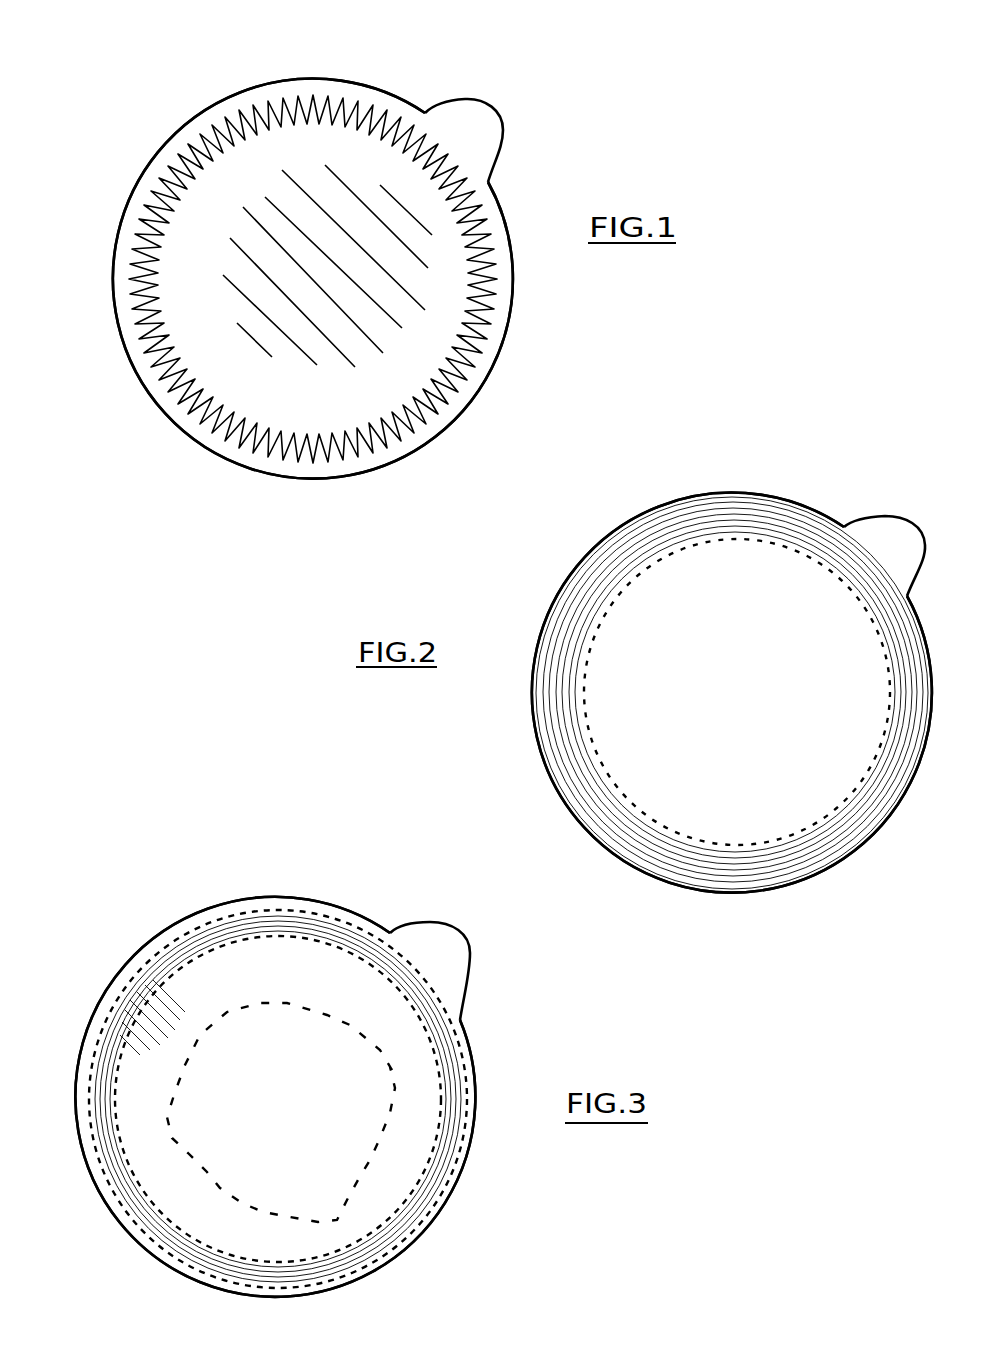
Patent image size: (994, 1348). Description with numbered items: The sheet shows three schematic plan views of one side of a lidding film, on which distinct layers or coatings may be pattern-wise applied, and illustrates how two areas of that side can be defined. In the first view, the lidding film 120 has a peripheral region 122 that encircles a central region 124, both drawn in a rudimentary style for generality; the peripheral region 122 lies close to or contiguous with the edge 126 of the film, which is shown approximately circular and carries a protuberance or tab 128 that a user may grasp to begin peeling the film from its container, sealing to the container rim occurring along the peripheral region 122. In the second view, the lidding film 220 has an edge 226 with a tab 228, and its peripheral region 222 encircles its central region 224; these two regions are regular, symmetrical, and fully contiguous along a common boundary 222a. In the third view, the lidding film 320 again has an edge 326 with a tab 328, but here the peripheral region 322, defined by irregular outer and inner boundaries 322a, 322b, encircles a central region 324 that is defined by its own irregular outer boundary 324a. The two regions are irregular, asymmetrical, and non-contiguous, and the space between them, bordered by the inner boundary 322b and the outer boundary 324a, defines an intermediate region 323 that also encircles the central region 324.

In FIG. 1, the lidding film 120 is at (140, 88).
In FIG. 1, the peripheral region 122 is at (258, 110).
In FIG. 1, the central region 124 is at (338, 202).
In FIG. 1, the edge 126 is at (131, 204).
In FIG. 1, the tab 128 is at (462, 121).
In FIG. 2, the lidding film 220 is at (541, 541).
In FIG. 2, the peripheral region 222 is at (667, 528).
In FIG. 2, the common boundary 222a is at (582, 708).
In FIG. 2, the central region 224 is at (752, 568).
In FIG. 2, the edge 226 is at (548, 614).
In FIG. 2, the tab 228 is at (893, 534).
In FIG. 3, the lidding film 320 is at (126, 900).
In FIG. 3, the peripheral region 322 is at (227, 928).
In FIG. 3, the outer boundary 322a is at (117, 1016).
In FIG. 3, the inner boundary 322b is at (182, 990).
In FIG. 3, the intermediate region 323 is at (412, 1045).
In FIG. 3, the central region 324 is at (295, 1035).
In FIG. 3, the outer boundary 324a is at (203, 1172).
In FIG. 3, the edge 326 is at (127, 966).
In FIG. 3, the tab 328 is at (437, 938).